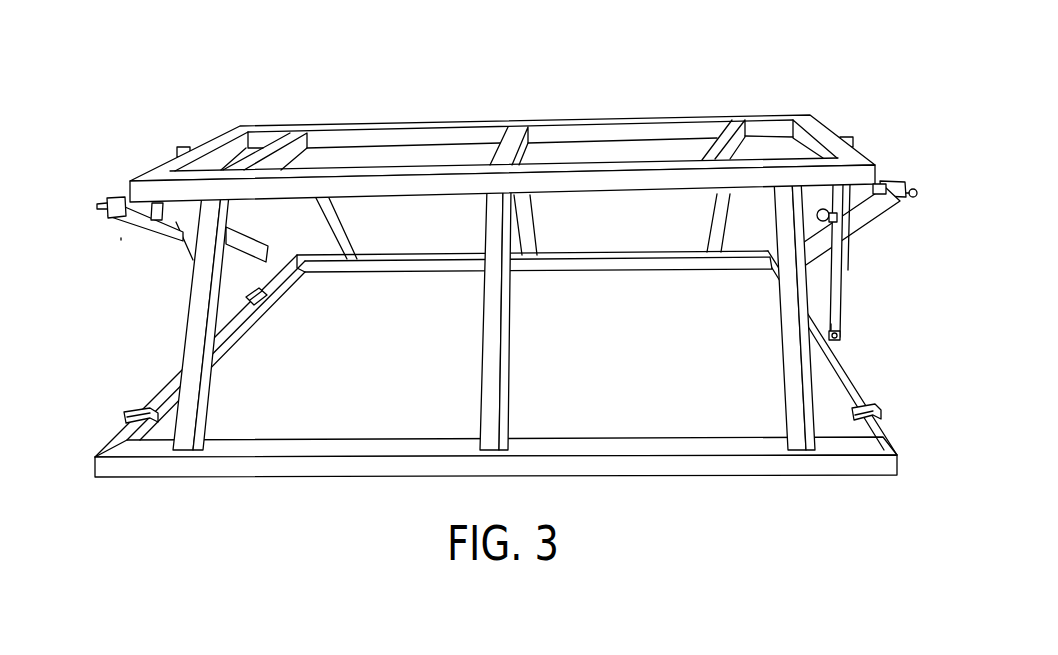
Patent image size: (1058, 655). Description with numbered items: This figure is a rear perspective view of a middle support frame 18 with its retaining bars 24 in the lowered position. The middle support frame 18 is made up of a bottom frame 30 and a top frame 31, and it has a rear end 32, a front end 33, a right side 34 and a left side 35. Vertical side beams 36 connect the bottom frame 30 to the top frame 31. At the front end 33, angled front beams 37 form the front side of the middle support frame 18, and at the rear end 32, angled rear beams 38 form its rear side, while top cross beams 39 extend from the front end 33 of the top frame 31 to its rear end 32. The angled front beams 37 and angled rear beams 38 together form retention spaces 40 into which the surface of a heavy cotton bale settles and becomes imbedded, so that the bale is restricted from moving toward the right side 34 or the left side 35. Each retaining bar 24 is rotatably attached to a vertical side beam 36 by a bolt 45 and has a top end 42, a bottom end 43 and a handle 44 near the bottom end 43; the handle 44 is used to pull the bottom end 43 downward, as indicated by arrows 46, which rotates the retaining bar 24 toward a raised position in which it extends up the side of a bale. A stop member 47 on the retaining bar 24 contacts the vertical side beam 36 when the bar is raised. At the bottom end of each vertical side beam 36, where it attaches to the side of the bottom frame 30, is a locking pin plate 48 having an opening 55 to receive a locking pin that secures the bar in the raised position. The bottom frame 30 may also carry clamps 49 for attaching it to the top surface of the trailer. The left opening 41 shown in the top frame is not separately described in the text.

The middle support frame 18 is at (502, 115).
The retaining bar 24 is at (893, 187).
The bottom frame 30 is at (848, 375).
The top frame 31 is at (712, 118).
The rear end 32 is at (481, 395).
The front end 33 is at (232, 116).
The right side 34 is at (165, 318).
The left side 35 is at (857, 300).
The vertical side beam 36 is at (176, 270).
The angled front beam 37 is at (347, 233).
The angled rear beam 38 is at (207, 390).
The top cross beam 39 is at (275, 142).
The retention space 40 is at (452, 230).
The opening 41 is at (243, 151).
The top end 42 is at (298, 283).
The bottom end 43 is at (108, 199).
The handle 44 is at (914, 197).
The bolt 45 is at (812, 196).
The arrows 46 is at (121, 238).
The stop member 47 is at (160, 207).
The locking pin plate 48 is at (839, 332).
The clamp 49 is at (130, 412).
The opening 55 is at (830, 340).